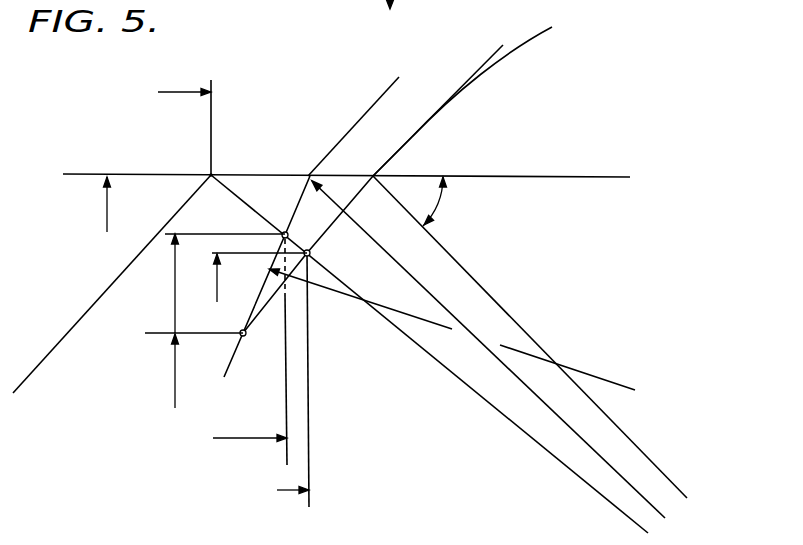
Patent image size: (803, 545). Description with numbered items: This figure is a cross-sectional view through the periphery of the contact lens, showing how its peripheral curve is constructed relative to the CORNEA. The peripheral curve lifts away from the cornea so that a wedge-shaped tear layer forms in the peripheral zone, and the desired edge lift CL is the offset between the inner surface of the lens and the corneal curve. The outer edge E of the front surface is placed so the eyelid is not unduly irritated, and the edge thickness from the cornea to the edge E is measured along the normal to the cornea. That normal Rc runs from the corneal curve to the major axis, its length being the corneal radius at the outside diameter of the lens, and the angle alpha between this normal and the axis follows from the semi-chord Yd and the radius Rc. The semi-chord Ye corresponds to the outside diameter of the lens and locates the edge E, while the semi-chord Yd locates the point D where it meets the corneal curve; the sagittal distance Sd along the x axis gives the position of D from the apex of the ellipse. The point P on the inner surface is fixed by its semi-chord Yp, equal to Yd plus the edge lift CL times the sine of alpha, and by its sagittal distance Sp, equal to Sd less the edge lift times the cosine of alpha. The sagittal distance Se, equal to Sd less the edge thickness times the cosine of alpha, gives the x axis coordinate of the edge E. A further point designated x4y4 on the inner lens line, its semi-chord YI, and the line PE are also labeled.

The cornea CORNEA is at (552, 27).
The edge lift CL is at (410, 138).
The x axis x is at (389, 14).
The outer edge E is at (194, 158).
The point P is at (284, 231).
The point on corneal curve D is at (319, 255).
The point (x4,y4) x4y4 is at (244, 336).
The angle alpha is at (245, 209).
The corneal radius Rc is at (459, 223).
The line PE is at (464, 338).
The sagittal distance Se is at (170, 95).
The semi-chord ye Ye is at (97, 217).
The semi-chord Yp is at (221, 283).
The semi-chord yd Yd is at (256, 289).
The dimension YI is at (194, 386).
The sagittal distance Sp is at (249, 453).
The sagittal distance Sd is at (277, 492).